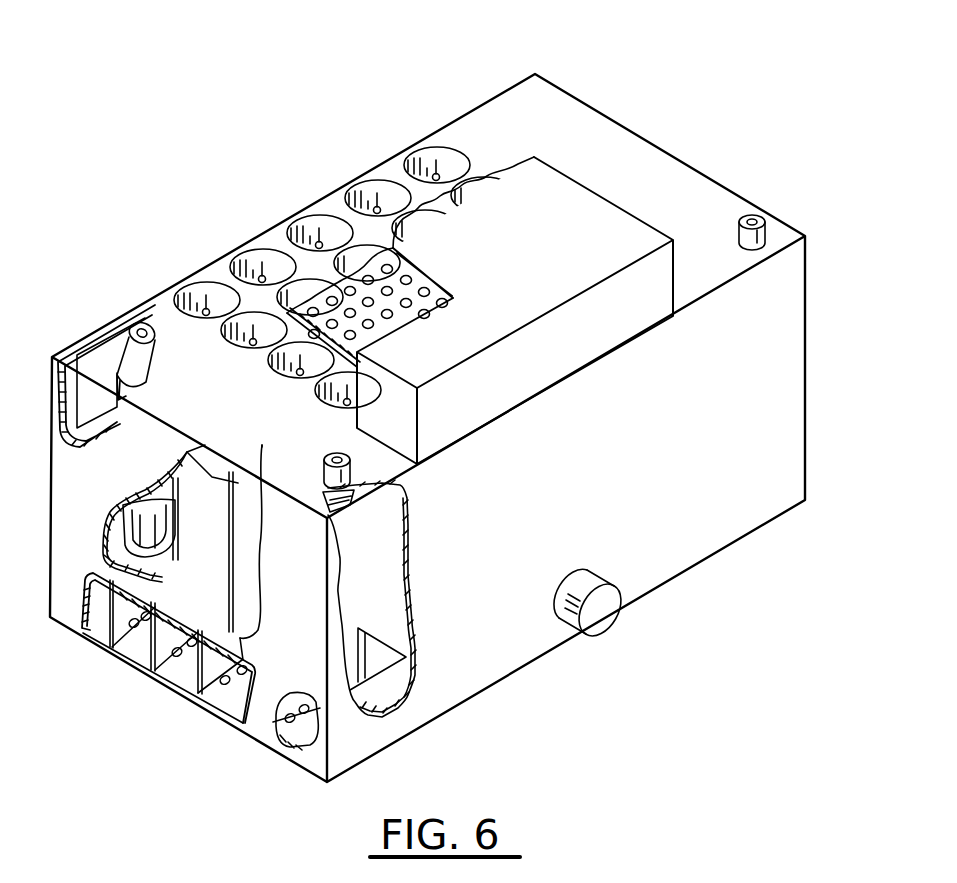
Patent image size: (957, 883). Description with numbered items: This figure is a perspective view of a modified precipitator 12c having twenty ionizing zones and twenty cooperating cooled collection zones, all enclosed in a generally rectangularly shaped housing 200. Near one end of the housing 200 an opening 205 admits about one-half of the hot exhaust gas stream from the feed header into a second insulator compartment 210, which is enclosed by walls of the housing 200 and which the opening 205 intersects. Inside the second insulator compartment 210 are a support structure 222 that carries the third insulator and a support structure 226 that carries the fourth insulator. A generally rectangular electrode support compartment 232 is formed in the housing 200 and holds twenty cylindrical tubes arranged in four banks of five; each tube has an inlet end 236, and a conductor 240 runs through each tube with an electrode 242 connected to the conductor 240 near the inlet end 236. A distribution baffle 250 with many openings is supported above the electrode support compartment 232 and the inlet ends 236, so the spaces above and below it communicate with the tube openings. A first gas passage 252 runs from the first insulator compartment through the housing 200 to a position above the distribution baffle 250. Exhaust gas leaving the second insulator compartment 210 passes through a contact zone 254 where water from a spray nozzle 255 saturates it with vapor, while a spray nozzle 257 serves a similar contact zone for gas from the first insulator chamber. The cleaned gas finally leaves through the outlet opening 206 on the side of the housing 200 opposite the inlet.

The precipitator 12c is at (530, 67).
The housing 200 is at (620, 120).
The electrode support compartment 232 is at (396, 158).
The conductor 240 is at (206, 314).
The electrode 242 is at (207, 306).
The opening 205 is at (85, 376).
The inlet end 236 is at (232, 309).
The distribution baffle 250 is at (368, 328).
The spray nozzle 257 is at (752, 213).
The spray nozzle 255 is at (330, 462).
The contact zone 254 is at (362, 528).
The first gas passage 252 is at (391, 686).
The outlet opening 206 is at (600, 636).
The support structure 222 is at (107, 652).
The second insulator compartment 210 is at (198, 578).
The support structure 226 is at (235, 620).